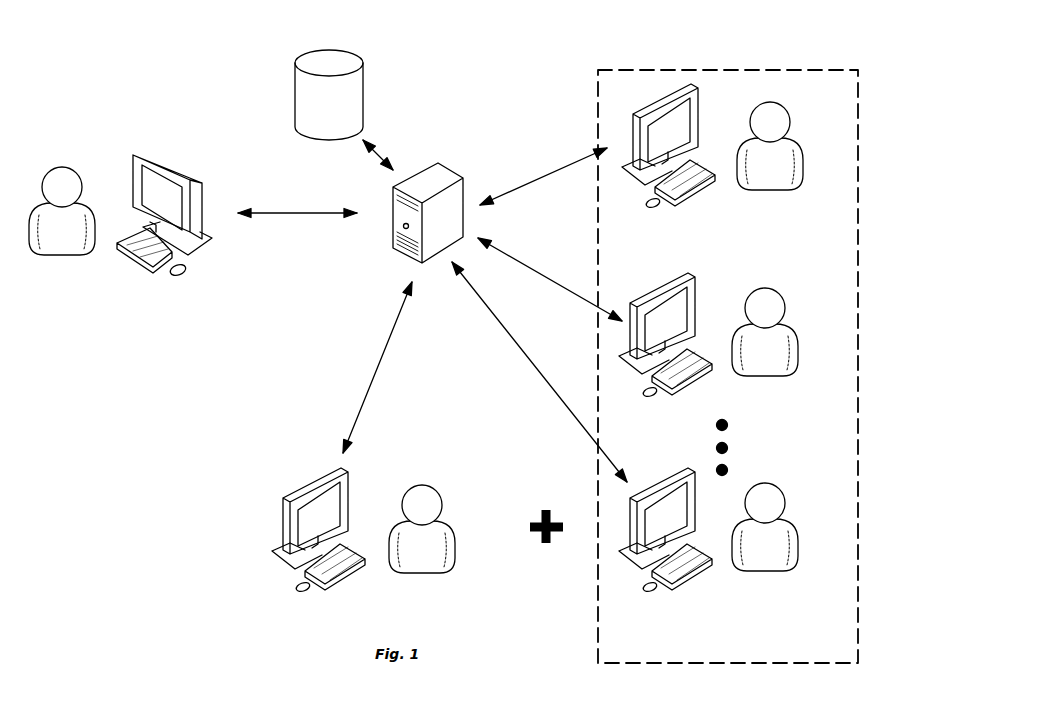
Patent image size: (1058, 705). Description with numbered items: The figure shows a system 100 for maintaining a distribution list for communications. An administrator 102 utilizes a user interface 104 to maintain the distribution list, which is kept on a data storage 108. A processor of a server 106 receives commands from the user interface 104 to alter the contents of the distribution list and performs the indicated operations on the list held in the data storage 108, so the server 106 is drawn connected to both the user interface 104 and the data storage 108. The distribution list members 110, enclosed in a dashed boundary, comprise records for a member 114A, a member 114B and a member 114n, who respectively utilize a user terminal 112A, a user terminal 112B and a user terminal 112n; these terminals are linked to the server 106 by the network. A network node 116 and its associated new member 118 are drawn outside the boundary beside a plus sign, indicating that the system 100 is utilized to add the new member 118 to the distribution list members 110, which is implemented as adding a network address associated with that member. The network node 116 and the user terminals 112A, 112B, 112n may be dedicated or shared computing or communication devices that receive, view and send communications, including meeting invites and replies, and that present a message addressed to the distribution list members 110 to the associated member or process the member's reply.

The system 100 is at (893, 52).
The administrator 102 is at (68, 256).
The user interface 104 is at (193, 250).
The server 106 is at (452, 168).
The data storage 108 is at (295, 92).
The distribution list members 110 is at (860, 153).
The user terminal 112A is at (677, 203).
The user terminal 112B is at (674, 392).
The user terminal 112n is at (674, 587).
The member 114A is at (762, 189).
The member 114B is at (760, 376).
The member 114n is at (760, 571).
The network node 116 is at (353, 476).
The new member 118 is at (423, 484).